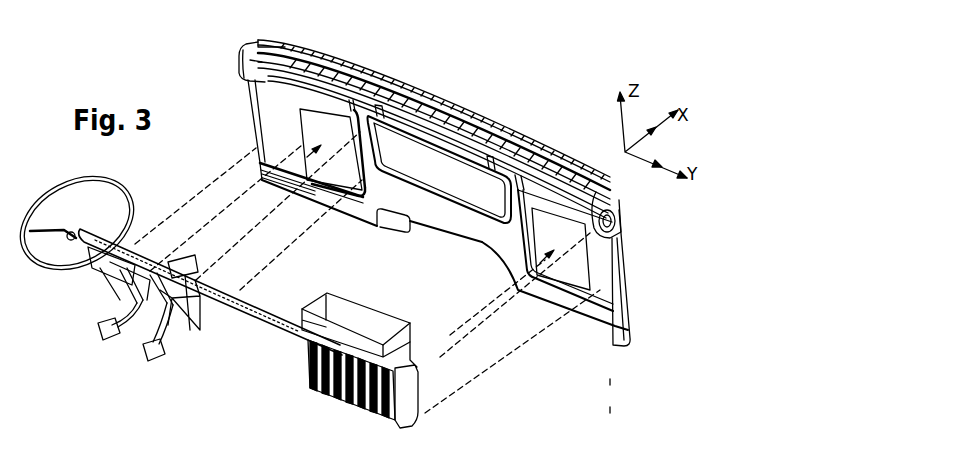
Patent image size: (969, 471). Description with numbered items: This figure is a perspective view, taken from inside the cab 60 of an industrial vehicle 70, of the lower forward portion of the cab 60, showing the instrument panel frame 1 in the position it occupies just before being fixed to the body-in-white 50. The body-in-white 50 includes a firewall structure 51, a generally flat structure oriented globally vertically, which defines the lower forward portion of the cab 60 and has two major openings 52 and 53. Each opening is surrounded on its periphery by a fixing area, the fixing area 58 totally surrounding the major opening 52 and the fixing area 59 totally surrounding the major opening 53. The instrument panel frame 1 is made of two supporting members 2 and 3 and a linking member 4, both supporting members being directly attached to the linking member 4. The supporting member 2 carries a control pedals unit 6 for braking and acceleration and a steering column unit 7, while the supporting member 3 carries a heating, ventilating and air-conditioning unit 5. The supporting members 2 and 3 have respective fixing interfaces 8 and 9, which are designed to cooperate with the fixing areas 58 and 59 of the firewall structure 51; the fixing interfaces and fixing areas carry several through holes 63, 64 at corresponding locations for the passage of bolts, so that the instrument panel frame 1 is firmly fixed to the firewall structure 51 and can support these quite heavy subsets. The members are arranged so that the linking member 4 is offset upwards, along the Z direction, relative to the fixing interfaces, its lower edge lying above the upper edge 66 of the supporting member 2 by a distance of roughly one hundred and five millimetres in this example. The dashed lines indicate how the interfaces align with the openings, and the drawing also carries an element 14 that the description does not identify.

The instrument panel frame 1 is at (472, 406).
The supporting member 2 is at (182, 348).
The supporting member 3 is at (293, 382).
The linking member 4 is at (283, 319).
The heating, ventilating and air-conditioning unit 5 is at (331, 396).
The control pedals unit 6 is at (159, 366).
The steering column unit 7 is at (66, 246).
The fixing interface 8 is at (190, 330).
The fixing interface 9 is at (421, 408).
The fixing tab 14 is at (411, 231).
The body-in-white 50 is at (610, 338).
The firewall structure 51 is at (624, 278).
The major opening 52 is at (258, 178).
The major opening 53 is at (497, 283).
The fixing area 58 is at (315, 99).
The fixing area 59 is at (568, 198).
The cab 60 is at (610, 393).
The through holes 63 is at (330, 116).
The through holes 64 is at (157, 244).
The upper edge 66 is at (176, 256).
The industrial vehicle 70 is at (610, 421).